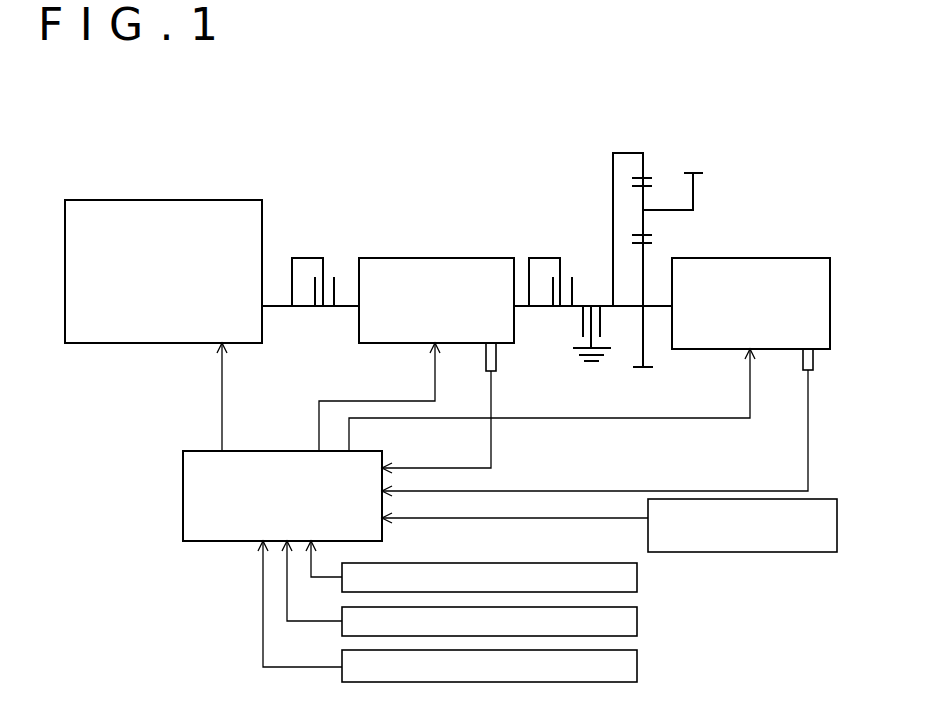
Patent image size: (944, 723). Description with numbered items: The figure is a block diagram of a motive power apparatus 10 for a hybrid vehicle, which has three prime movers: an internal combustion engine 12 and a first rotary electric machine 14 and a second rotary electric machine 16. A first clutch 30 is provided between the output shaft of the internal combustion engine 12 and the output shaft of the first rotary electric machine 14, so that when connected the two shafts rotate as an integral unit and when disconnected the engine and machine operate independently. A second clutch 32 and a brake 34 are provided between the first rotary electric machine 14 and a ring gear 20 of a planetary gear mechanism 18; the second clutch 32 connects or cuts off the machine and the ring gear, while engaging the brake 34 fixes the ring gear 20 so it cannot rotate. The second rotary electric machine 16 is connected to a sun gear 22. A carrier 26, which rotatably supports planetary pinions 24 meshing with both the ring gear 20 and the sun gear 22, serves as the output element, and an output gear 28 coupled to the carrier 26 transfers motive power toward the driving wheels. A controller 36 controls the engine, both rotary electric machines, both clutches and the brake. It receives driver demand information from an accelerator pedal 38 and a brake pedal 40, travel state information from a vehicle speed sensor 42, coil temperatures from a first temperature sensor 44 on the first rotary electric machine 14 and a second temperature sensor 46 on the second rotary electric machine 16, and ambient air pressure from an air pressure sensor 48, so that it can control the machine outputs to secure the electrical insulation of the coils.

The motive power apparatus 10 is at (365, 135).
The internal combustion engine 12 is at (218, 200).
The first rotary electric machine 14 is at (438, 258).
The second rotary electric machine 16 is at (788, 258).
The planetary gear mechanism 18 is at (679, 228).
The ring gear 20 is at (645, 160).
The sun gear 22 is at (645, 348).
The planetary pinions 24 is at (647, 224).
The carrier 26 is at (686, 213).
The output gear 28 is at (700, 173).
The first clutch 30 is at (333, 247).
The second clutch 32 is at (552, 246).
The brake 34 is at (568, 353).
The controller 36 is at (183, 488).
The accelerator pedal 38 is at (637, 577).
The brake pedal 40 is at (637, 621).
The vehicle speed sensor 42 is at (637, 666).
The first temperature sensor 44 is at (486, 357).
The second temperature sensor 46 is at (814, 360).
The air pressure sensor 48 is at (812, 552).